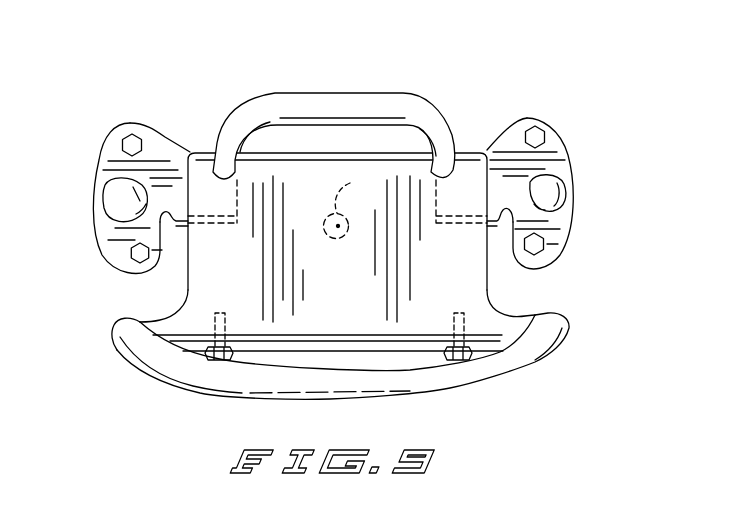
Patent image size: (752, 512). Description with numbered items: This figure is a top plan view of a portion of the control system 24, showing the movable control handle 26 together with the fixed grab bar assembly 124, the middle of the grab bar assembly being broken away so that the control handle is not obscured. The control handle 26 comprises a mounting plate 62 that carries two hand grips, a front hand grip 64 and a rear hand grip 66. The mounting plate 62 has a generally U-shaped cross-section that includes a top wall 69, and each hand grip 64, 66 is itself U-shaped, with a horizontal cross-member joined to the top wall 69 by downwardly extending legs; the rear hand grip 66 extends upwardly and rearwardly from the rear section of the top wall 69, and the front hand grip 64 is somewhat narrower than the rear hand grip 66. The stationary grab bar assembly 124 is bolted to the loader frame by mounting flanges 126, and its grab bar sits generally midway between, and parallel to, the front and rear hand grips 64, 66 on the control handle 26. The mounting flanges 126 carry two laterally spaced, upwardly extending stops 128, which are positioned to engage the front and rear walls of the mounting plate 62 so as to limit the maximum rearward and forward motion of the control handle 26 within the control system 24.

The control system 24 is at (474, 118).
The control handle 26 is at (300, 185).
The mounting plate 62 is at (207, 282).
The front hand grip 64 is at (270, 100).
The rear hand grip 66 is at (445, 393).
The top wall 69 is at (346, 300).
The grab bar assembly 124 is at (122, 198).
The mounting flanges 126 is at (153, 143).
The stops 128 is at (168, 226).